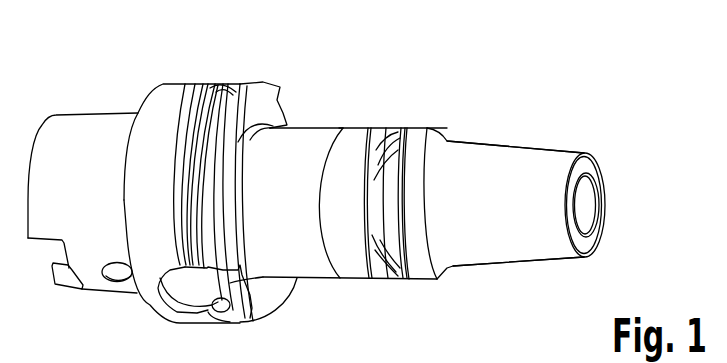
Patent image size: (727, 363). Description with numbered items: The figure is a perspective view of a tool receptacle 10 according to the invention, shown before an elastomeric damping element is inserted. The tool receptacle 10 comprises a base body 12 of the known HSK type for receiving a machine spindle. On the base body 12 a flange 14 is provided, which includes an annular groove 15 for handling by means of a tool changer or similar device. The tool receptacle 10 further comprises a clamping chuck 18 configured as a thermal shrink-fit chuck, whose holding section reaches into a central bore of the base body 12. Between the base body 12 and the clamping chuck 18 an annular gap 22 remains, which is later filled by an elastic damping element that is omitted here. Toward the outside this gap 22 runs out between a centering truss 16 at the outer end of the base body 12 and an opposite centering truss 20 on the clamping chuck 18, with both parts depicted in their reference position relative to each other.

The tool receptacle 10 is at (542, 96).
The base body 12 is at (96, 92).
The flange 14 is at (180, 104).
The annular groove 15 is at (216, 100).
The centering truss 16 is at (357, 145).
The clamping chuck 18 is at (487, 287).
The centering truss 20 is at (410, 145).
The gap 22 is at (400, 278).